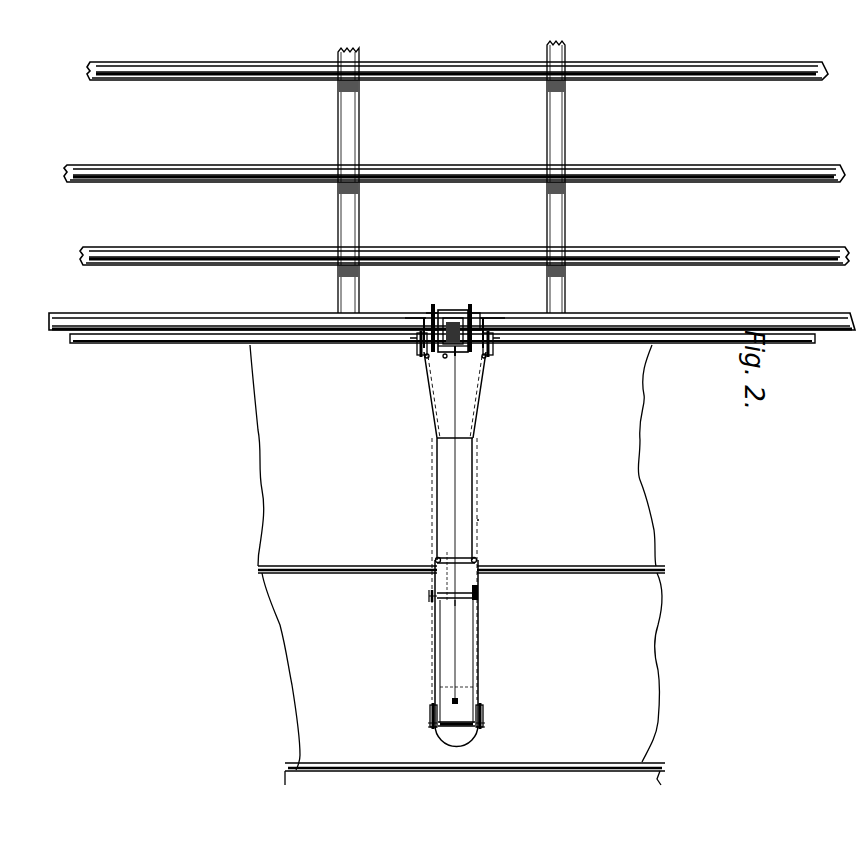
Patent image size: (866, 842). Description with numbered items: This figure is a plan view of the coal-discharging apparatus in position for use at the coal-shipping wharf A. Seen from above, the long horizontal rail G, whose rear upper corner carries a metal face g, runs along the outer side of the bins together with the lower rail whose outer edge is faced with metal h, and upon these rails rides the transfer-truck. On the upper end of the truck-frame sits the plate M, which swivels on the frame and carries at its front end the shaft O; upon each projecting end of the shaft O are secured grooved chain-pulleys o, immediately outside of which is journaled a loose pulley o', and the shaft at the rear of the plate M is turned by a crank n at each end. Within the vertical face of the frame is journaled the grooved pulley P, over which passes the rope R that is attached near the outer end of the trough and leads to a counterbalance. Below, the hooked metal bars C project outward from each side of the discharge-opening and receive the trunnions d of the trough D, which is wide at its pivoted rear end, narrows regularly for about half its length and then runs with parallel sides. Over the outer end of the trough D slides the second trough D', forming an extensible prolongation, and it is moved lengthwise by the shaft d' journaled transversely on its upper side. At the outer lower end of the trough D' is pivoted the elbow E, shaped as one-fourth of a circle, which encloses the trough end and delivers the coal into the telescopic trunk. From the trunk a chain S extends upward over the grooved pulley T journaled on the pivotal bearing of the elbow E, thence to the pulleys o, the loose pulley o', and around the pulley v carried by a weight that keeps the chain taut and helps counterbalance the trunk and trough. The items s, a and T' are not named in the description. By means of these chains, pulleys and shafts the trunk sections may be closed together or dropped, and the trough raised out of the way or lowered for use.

The coal-shipping wharf A is at (451, 177).
The plate M is at (455, 310).
The rail G is at (500, 310).
The metal face g is at (410, 310).
The metal bar C is at (420, 355).
The metal facing h is at (410, 340).
The rope R is at (452, 410).
The grooved chain-pulley o is at (421, 363).
The shaft O is at (445, 358).
The grooved pulley P is at (456, 358).
The loose pulley o' is at (490, 364).
The trough D is at (464, 499).
The chain S is at (432, 462).
The slot s is at (479, 520).
The trunnion d is at (457, 574).
The shaft d' is at (429, 603).
The rod a is at (451, 608).
The second trough D' is at (448, 653).
The elbow E is at (456, 732).
The crank n is at (451, 708).
The pulley v is at (430, 708).
The grooved pulley T is at (423, 731).
The foot T' is at (488, 733).